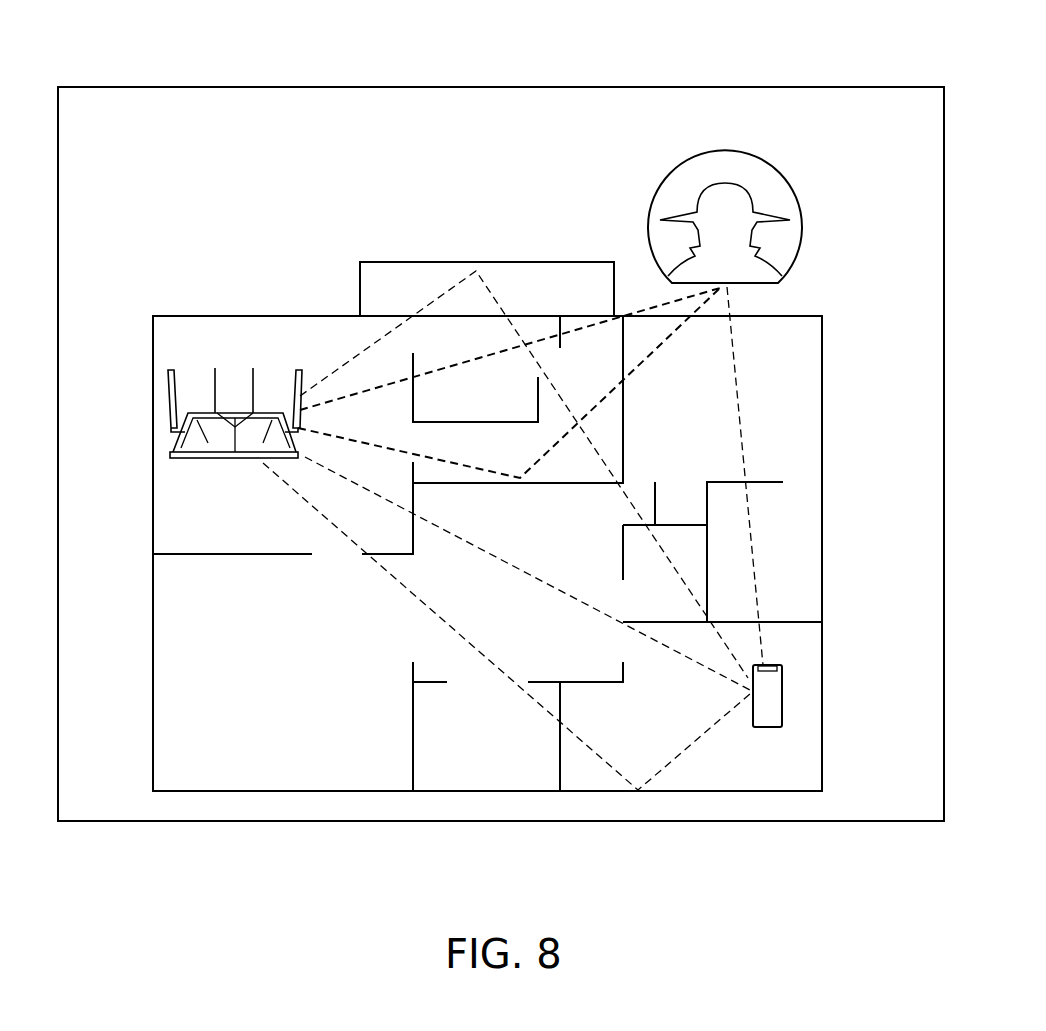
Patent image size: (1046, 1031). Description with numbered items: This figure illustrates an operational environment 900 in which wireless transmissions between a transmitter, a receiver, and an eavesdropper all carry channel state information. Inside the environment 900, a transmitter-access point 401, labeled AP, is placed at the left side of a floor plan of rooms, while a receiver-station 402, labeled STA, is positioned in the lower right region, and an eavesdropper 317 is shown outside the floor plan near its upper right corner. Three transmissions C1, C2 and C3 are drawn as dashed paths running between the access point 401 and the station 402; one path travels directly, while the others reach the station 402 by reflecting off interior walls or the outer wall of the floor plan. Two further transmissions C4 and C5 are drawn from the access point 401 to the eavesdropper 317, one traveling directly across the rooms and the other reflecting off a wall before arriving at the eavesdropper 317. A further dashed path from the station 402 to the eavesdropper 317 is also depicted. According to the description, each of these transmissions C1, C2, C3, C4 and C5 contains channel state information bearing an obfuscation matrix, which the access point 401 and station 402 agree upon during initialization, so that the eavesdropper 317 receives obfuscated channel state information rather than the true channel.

The operational environment 900 is at (142, 60).
The eavesdropper 317 is at (800, 243).
The transmitter-access point 401 is at (170, 452).
The receiver-station (STA) 402 is at (784, 705).
The transmission C1 is at (407, 587).
The transmission C2 is at (540, 583).
The transmission C3 is at (447, 292).
The transmission C4 is at (357, 395).
The transmission C5 is at (335, 436).